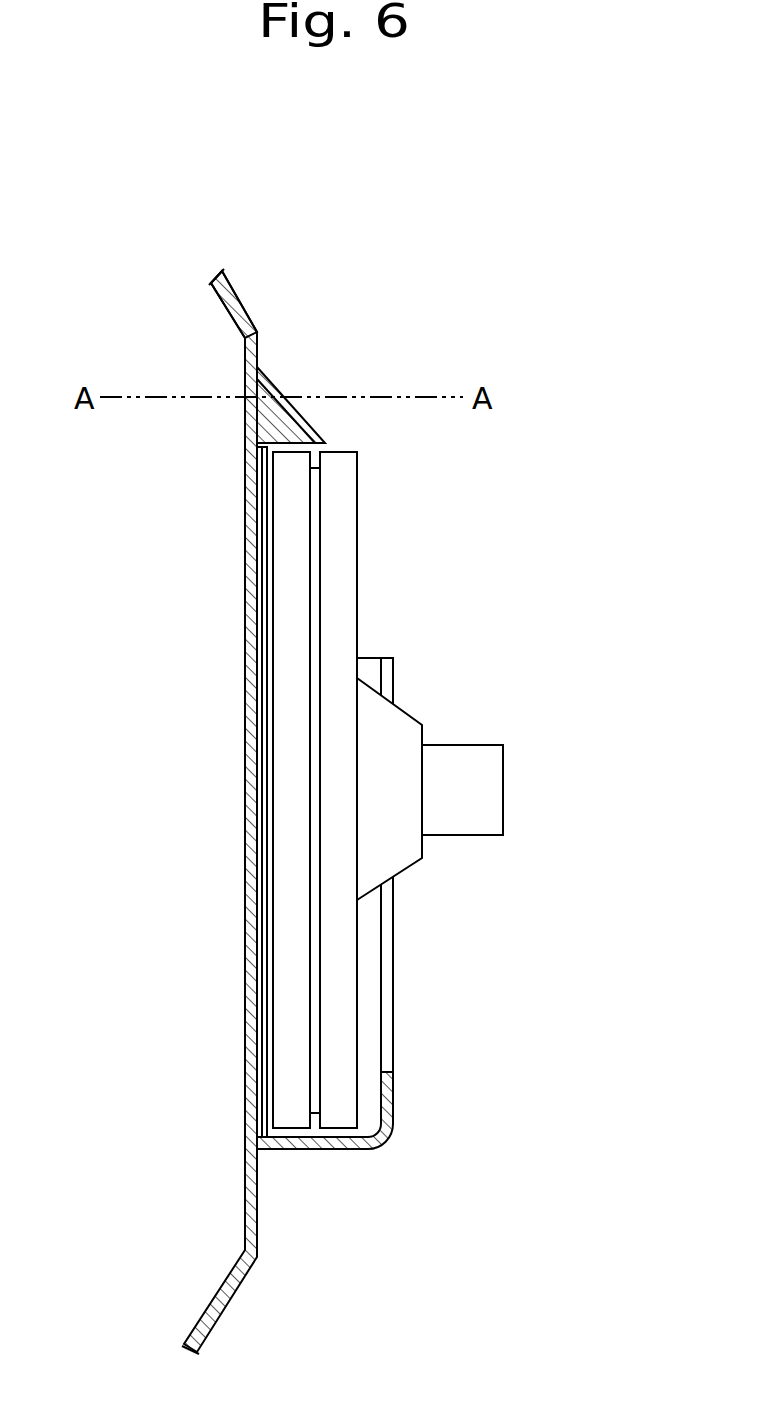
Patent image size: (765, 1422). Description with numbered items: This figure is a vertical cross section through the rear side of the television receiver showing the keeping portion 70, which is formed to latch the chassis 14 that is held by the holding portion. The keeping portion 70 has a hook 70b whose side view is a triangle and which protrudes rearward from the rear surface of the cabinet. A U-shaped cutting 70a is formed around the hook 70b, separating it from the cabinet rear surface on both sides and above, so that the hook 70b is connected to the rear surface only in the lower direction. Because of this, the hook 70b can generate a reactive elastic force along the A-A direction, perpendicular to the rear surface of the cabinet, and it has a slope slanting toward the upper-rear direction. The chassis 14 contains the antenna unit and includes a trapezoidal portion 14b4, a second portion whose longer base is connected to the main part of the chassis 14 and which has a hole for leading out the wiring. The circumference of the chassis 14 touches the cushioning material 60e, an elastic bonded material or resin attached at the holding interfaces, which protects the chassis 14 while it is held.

The keeping portion 70 is at (322, 253).
The U-shaped cutting 70a is at (257, 357).
The hook 70b is at (297, 405).
The chassis 14 is at (357, 580).
The trapezoidal portion 14b4 is at (407, 710).
The cushioning material 60e is at (380, 1072).